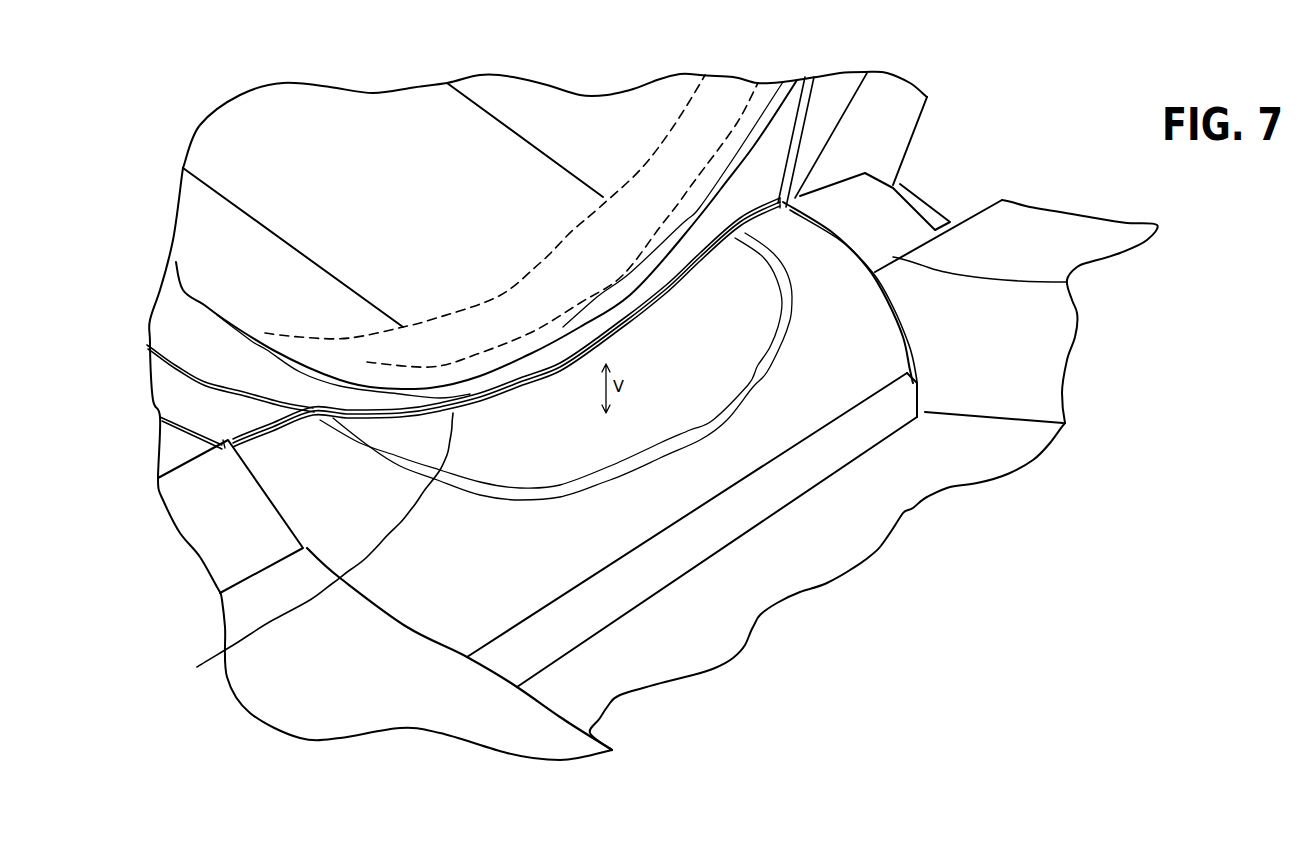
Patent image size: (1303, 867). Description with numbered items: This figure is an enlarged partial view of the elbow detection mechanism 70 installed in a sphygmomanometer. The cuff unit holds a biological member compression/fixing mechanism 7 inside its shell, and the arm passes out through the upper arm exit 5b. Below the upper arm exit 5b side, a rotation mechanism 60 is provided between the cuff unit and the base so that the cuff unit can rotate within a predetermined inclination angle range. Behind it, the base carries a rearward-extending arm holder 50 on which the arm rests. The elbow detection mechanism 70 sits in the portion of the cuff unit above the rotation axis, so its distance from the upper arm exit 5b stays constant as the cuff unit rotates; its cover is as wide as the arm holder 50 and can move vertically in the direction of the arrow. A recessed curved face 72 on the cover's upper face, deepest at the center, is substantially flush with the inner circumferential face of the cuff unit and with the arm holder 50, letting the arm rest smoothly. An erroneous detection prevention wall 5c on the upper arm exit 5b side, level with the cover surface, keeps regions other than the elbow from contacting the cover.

The biological member compression/fixing mechanism 7 is at (493, 177).
The upper arm exit 5b is at (797, 150).
The erroneous detection prevention wall 5c is at (310, 548).
The rotation mechanism 60 is at (200, 508).
The arm holder 50 is at (978, 457).
The elbow detection mechanism 70 is at (523, 563).
The recessed curved face 72 is at (653, 423).